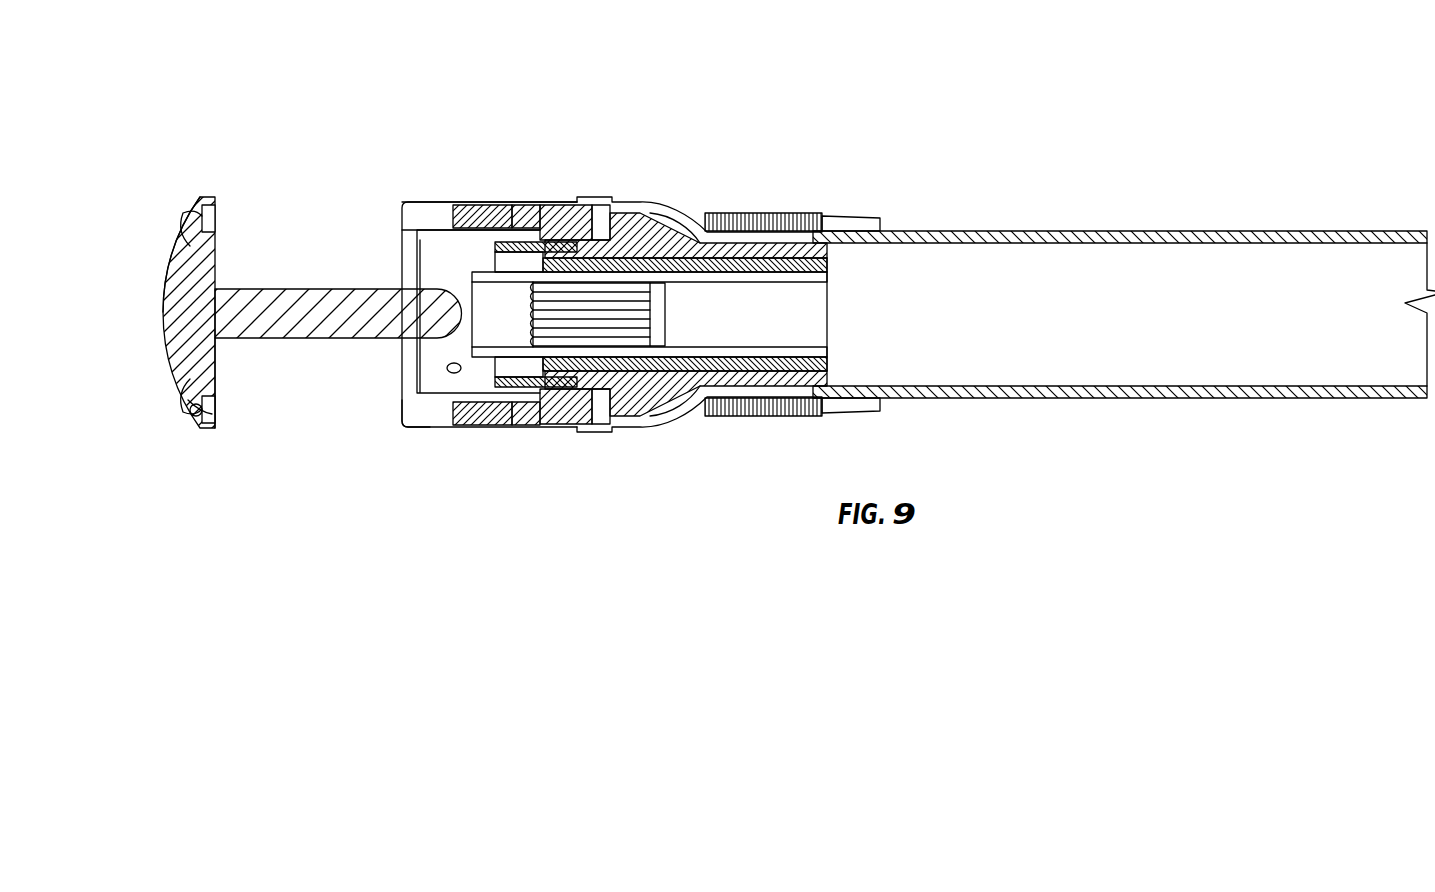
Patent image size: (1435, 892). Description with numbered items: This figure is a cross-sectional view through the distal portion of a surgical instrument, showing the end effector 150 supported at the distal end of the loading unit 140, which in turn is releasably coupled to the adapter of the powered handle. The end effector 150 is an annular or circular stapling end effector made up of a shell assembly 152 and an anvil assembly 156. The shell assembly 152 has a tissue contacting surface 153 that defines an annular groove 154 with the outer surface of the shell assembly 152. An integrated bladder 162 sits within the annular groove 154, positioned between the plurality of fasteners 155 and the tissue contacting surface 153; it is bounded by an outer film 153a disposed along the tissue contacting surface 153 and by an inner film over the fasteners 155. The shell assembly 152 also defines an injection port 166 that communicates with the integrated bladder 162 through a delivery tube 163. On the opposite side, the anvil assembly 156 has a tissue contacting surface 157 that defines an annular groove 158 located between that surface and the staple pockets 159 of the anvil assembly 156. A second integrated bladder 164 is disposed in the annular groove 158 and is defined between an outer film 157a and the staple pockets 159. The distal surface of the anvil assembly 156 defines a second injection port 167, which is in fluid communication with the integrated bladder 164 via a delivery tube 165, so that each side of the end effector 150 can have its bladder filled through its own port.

The loading unit 140 is at (1276, 214).
The end effector 150 is at (413, 126).
The shell assembly 152 is at (538, 180).
The tissue contacting surface 153 is at (394, 348).
The outer film 153a is at (398, 412).
The annular groove 154 is at (418, 203).
The fasteners 155 is at (488, 213).
The anvil assembly 156 is at (135, 221).
The tissue contacting surface 157 is at (222, 368).
The outer film 157a is at (216, 400).
The annular groove 158 is at (200, 420).
The staple pockets 159 is at (194, 407).
The integrated bladder 162 is at (436, 214).
The delivery tube 163 is at (564, 208).
The integrated bladder 164 is at (210, 214).
The delivery tube 165 is at (175, 258).
The injection port 166 is at (606, 214).
The second injection port 167 is at (185, 213).